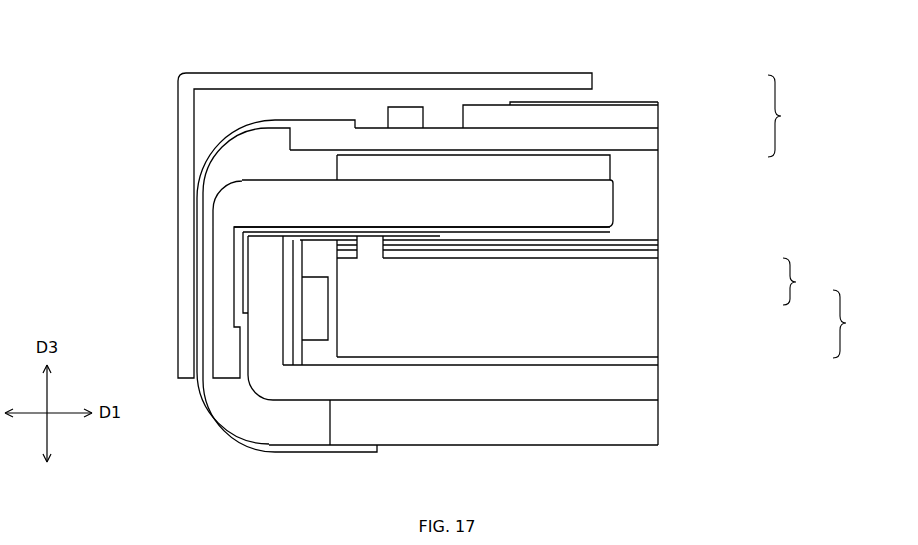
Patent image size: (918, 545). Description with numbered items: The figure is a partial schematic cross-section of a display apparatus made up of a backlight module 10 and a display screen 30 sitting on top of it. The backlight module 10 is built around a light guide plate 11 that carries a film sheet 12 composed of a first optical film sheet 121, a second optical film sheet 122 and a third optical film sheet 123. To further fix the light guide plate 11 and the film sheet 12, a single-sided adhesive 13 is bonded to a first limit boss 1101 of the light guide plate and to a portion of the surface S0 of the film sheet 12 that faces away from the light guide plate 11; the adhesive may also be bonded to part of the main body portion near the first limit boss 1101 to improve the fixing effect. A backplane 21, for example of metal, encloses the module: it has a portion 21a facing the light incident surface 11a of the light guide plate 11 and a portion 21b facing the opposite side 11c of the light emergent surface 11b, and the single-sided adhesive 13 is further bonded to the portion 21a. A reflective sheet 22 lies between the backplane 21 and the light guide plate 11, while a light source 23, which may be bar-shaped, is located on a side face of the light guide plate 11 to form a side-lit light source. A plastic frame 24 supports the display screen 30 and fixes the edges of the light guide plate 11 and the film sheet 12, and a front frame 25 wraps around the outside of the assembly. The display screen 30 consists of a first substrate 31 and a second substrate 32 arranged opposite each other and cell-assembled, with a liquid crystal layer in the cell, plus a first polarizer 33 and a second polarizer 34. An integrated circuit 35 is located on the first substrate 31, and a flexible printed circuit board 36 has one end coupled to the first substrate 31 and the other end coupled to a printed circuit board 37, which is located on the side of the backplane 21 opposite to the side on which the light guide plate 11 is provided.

The backlight module 10 is at (854, 324).
The light guide plate 11 is at (648, 303).
The light incident surface 11a is at (339, 306).
The light emergent surface 11b is at (513, 264).
The opposite side of the light emergent surface 11c is at (598, 356).
The first limit boss 1101 is at (384, 242).
The film sheet 12 is at (803, 281).
The first optical film sheet 121 is at (660, 257).
The second optical film sheet 122 is at (660, 249).
The third optical film sheet 123 is at (660, 241).
The single-sided adhesive 13 is at (616, 228).
The backplane 21 is at (612, 393).
The portion of the backplane facing the light incident surface 21a is at (266, 300).
The portion of the backplane facing the opposite side of the light emergent surface 21b is at (391, 410).
The reflective sheet 22 is at (640, 362).
The light source 23 is at (310, 302).
The plastic frame 24 is at (222, 236).
The front frame 25 is at (195, 146).
The display screen 30 is at (735, 260).
The first substrate 31 is at (633, 145).
The second substrate 32 is at (638, 117).
The first polarizer 33 is at (660, 153).
The second polarizer 34 is at (655, 100).
The integrated circuit 35 is at (405, 118).
The flexible printed circuit board 36 is at (268, 126).
The printed circuit board 37 is at (565, 447).
The surface of the film sheet away from the light guide plate S0 is at (415, 238).